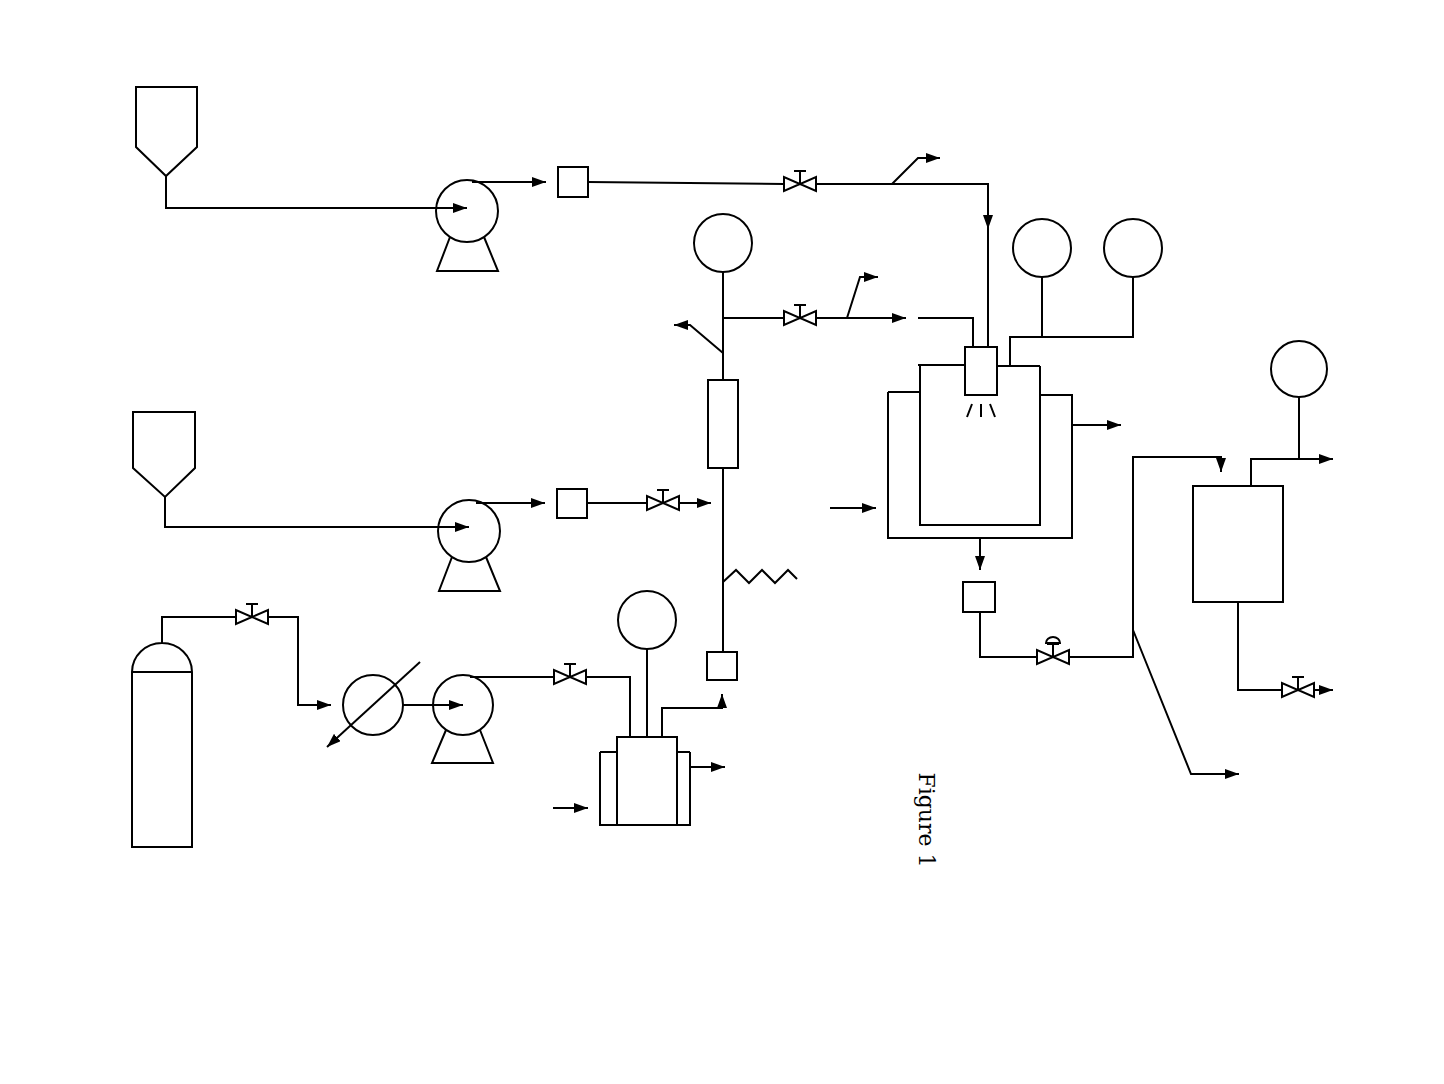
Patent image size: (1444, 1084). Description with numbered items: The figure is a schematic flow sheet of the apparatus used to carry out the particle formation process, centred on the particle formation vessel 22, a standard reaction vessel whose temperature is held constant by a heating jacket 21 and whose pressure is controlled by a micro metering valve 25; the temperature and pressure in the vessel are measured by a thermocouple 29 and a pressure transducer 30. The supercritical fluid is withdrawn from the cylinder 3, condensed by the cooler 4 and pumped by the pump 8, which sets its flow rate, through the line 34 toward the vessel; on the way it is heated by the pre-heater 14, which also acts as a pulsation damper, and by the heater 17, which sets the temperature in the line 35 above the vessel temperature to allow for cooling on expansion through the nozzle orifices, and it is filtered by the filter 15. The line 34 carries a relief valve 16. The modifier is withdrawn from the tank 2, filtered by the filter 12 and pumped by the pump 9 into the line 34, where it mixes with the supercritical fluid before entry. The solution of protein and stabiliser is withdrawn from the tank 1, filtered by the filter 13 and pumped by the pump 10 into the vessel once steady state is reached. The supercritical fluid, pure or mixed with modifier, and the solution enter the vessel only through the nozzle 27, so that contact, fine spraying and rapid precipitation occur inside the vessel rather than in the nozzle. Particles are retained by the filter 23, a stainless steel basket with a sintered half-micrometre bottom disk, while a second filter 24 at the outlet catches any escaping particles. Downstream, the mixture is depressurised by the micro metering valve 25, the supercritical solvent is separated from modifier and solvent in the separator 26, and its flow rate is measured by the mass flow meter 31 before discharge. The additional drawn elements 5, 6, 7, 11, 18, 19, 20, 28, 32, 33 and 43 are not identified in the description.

The tank 1 is at (162, 732).
The tank 2 is at (278, 469).
The cylinder 3 is at (279, 147).
The cooler 4 is at (395, 719).
The mixing vessel 5 is at (662, 803).
The outlet stream 6 is at (936, 163).
The valve 7 is at (283, 654).
The pump 8 is at (462, 741).
The pump 9 is at (469, 566).
The pump 10 is at (467, 248).
The valve 11 is at (550, 700).
The filter 12 is at (561, 526).
The filter 13 is at (628, 205).
The pre-heater 14 is at (564, 792).
The filter 15 is at (724, 693).
The relief valve 16 is at (785, 582).
The heater 17 is at (695, 516).
The valve 18 is at (679, 519).
The valve 19 is at (848, 334).
The valve 20 is at (885, 259).
The heating jacket 21 is at (852, 492).
The particle formation vessel 22 is at (935, 381).
The filter 23 is at (1004, 451).
The second filter 24 is at (1002, 597).
The micro metering valve 25 is at (1129, 578).
The separator 26 is at (1314, 515).
The nozzle 27 is at (977, 388).
The temperature indicator 28 is at (699, 297).
The thermocouple 29 is at (1040, 274).
The pressure transducer 30 is at (1102, 259).
The mass flow meter 31 is at (1324, 400).
The drain valve 32 is at (1285, 668).
The outlet stream 33 is at (1216, 710).
The line 34 is at (663, 329).
The line 35 is at (892, 289).
The pressure indicator 43 is at (647, 645).